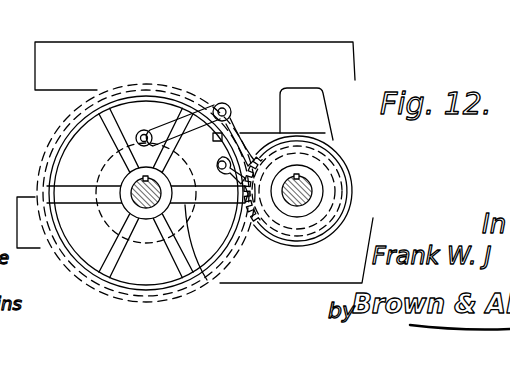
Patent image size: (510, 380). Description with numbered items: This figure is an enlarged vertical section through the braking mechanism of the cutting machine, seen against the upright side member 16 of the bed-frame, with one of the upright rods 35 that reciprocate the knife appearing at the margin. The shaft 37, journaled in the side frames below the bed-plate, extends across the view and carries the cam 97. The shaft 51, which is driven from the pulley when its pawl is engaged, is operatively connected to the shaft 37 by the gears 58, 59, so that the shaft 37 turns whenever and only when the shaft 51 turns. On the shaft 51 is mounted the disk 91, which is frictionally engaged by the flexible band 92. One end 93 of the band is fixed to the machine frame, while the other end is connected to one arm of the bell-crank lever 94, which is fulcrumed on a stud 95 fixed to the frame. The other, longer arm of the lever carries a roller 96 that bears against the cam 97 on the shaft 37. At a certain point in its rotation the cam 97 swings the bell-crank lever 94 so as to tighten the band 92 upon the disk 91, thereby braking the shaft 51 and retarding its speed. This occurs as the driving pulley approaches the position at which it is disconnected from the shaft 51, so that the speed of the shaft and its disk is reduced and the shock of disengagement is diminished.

The upright side member 16 is at (50, 82).
The upright rod 35 is at (186, 240).
The shaft 37 is at (133, 203).
The shaft 51 is at (312, 186).
The gear 58 is at (256, 249).
The gear 59 is at (187, 297).
The disk 91 is at (331, 147).
The flexible band 92 is at (287, 132).
The end of band 93 is at (225, 182).
The bell-crank lever 94 is at (168, 131).
The stud 95 is at (238, 92).
The roller 96 is at (144, 129).
The cam 97 is at (112, 170).